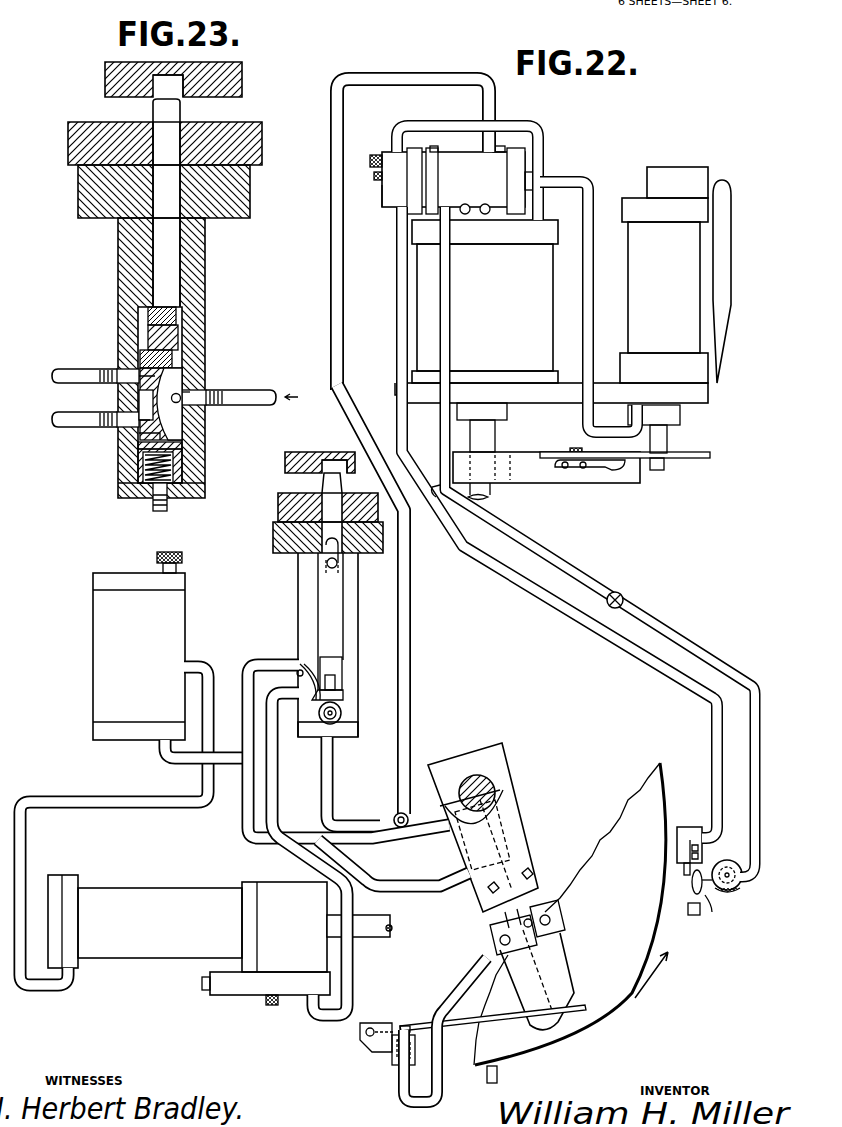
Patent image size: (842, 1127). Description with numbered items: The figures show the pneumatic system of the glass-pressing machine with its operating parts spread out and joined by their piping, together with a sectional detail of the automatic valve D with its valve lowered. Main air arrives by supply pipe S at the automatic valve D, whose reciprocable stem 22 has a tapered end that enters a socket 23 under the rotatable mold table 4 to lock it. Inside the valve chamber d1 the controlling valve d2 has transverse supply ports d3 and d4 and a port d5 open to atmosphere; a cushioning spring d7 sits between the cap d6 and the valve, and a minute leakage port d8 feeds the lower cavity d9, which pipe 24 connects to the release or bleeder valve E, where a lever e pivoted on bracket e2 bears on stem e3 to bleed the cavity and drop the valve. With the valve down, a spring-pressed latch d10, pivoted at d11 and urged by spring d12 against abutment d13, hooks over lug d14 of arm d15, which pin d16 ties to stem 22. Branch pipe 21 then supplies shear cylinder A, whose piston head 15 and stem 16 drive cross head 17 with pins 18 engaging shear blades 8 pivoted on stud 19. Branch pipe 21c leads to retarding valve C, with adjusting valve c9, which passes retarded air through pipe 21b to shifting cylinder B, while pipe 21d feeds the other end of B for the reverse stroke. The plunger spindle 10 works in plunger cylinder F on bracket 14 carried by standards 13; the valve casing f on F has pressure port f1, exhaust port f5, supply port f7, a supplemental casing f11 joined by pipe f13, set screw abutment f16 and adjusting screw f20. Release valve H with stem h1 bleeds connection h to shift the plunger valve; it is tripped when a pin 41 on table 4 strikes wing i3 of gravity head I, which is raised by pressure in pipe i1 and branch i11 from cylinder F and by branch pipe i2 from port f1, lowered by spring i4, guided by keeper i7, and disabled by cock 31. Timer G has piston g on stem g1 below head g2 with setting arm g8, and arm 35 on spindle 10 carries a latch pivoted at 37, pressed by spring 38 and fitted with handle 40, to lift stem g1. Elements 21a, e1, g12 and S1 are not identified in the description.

In FIG. 23, the mold supporting table 4 is at (243, 83).
In FIG. 22, the mold supporting table 4 is at (300, 454).
In FIG. 22, the pin 41 is at (498, 1077).
In FIG. 22, the shear blades 8 is at (510, 969).
In FIG. 22, the spindle 10 is at (490, 497).
In FIG. 22, the standard 13 is at (488, 783).
In FIG. 22, the supporting bracket 14 is at (700, 396).
In FIG. 22, the piston head 15 is at (533, 843).
In FIG. 22, the stem 16 is at (500, 912).
In FIG. 22, the cross head 17 is at (557, 912).
In FIG. 22, the pins 18 is at (563, 932).
In FIG. 22, the rivet or stud 19 is at (531, 908).
In FIG. 23, the branch pipe 21 is at (79, 376).
In FIG. 22, the branch pipe 21 is at (408, 838).
In FIG. 22, the pipe branch 21a is at (463, 889).
In FIG. 22, the supply pipe connection 21b is at (214, 660).
In FIG. 22, the branch pipe 21c is at (231, 765).
In FIG. 23, the pipe 21d is at (58, 431).
In FIG. 22, the pipe 21d is at (280, 784).
In FIG. 23, the reciprocable stem 22 is at (162, 243).
In FIG. 22, the reciprocable stem 22 is at (328, 485).
In FIG. 23, the socket 23 is at (158, 87).
In FIG. 22, the socket 23 is at (333, 460).
In FIG. 23, the pipe 24 is at (156, 505).
In FIG. 22, the pipe 24 is at (333, 791).
In FIG. 22, the valve or cock 31 is at (624, 596).
In FIG. 22, the laterally extending arm 35 is at (554, 486).
In FIG. 22, the pivot 37 is at (574, 450).
In FIG. 22, the spring 38 is at (602, 472).
In FIG. 22, the terminal handle portion 40 is at (628, 474).
In FIG. 22, the shear cylinder A is at (520, 815).
In FIG. 22, the shifting cylinder B is at (187, 923).
In FIG. 22, the retarding valve C is at (139, 656).
In FIG. 22, the controlling valve c9 is at (183, 567).
In FIG. 23, the automatic valve D is at (205, 287).
In FIG. 22, the automatic valve D is at (298, 578).
In FIG. 23, the cylindrical valve chamber d1 is at (178, 411).
In FIG. 23, the controlling valve d2 is at (182, 395).
In FIG. 23, the transverse air supply port d3 is at (167, 380).
In FIG. 23, the transverse air supply port d4 is at (140, 422).
In FIG. 23, the port d5 is at (135, 398).
In FIG. 23, the cap d6 is at (140, 487).
In FIG. 22, the cap d6 is at (316, 739).
In FIG. 23, the cushioning spring d7 is at (176, 460).
In FIG. 23, the leakage port d8 is at (182, 445).
In FIG. 23, the cavity d9 is at (181, 480).
In FIG. 23, the locking latch d10 is at (135, 425).
In FIG. 22, the locking latch d10 is at (331, 667).
In FIG. 22, the pivot d11 is at (342, 715).
In FIG. 22, the pressure spring d12 is at (344, 692).
In FIG. 22, the abutment d13 is at (300, 674).
In FIG. 22, the lug d14 is at (335, 680).
In FIG. 22, the arm d15 is at (330, 602).
In FIG. 22, the pin d16 is at (340, 574).
In FIG. 22, the release or bleeder valve E is at (368, 1052).
In FIG. 22, the lever e is at (462, 1023).
In FIG. 22, the pivot e1 is at (364, 1033).
In FIG. 22, the bracket e2 is at (386, 1053).
In FIG. 22, the stem e3 is at (408, 1027).
In FIG. 22, the plunger cylinder F is at (476, 307).
In FIG. 22, the valve casing f is at (461, 180).
In FIG. 22, the pressure port f1 is at (430, 226).
In FIG. 22, the outlet exhaust port f5 is at (466, 240).
In FIG. 22, the supply port f7 is at (480, 231).
In FIG. 22, the supplemental valve casing f11 is at (418, 213).
In FIG. 22, the pipe f13 is at (445, 131).
In FIG. 22, the set screw abutment f16 is at (390, 196).
In FIG. 22, the screw f20 is at (372, 155).
In FIG. 22, the timer G is at (664, 311).
In FIG. 22, the piston g is at (455, 76).
In FIG. 22, the stem g1 is at (668, 440).
In FIG. 22, the head g2 is at (680, 168).
In FIG. 22, the arm g8 is at (730, 286).
In FIG. 22, the pipe g12 is at (588, 307).
In FIG. 22, the release valve H is at (688, 827).
In FIG. 22, the connection h is at (397, 318).
In FIG. 22, the stem h1 is at (684, 870).
In FIG. 22, the gravity head I is at (727, 865).
In FIG. 22, the pipe i1 is at (761, 808).
In FIG. 22, the branch pipe i2 is at (451, 303).
In FIG. 22, the branch i11 is at (432, 417).
In FIG. 22, the wing i3 is at (695, 894).
In FIG. 22, the spring i4 is at (741, 889).
In FIG. 22, the loop or keeper device i7 is at (713, 905).
In FIG. 23, the main air supply pipe S is at (265, 390).
In FIG. 22, the pipe S1 is at (411, 715).